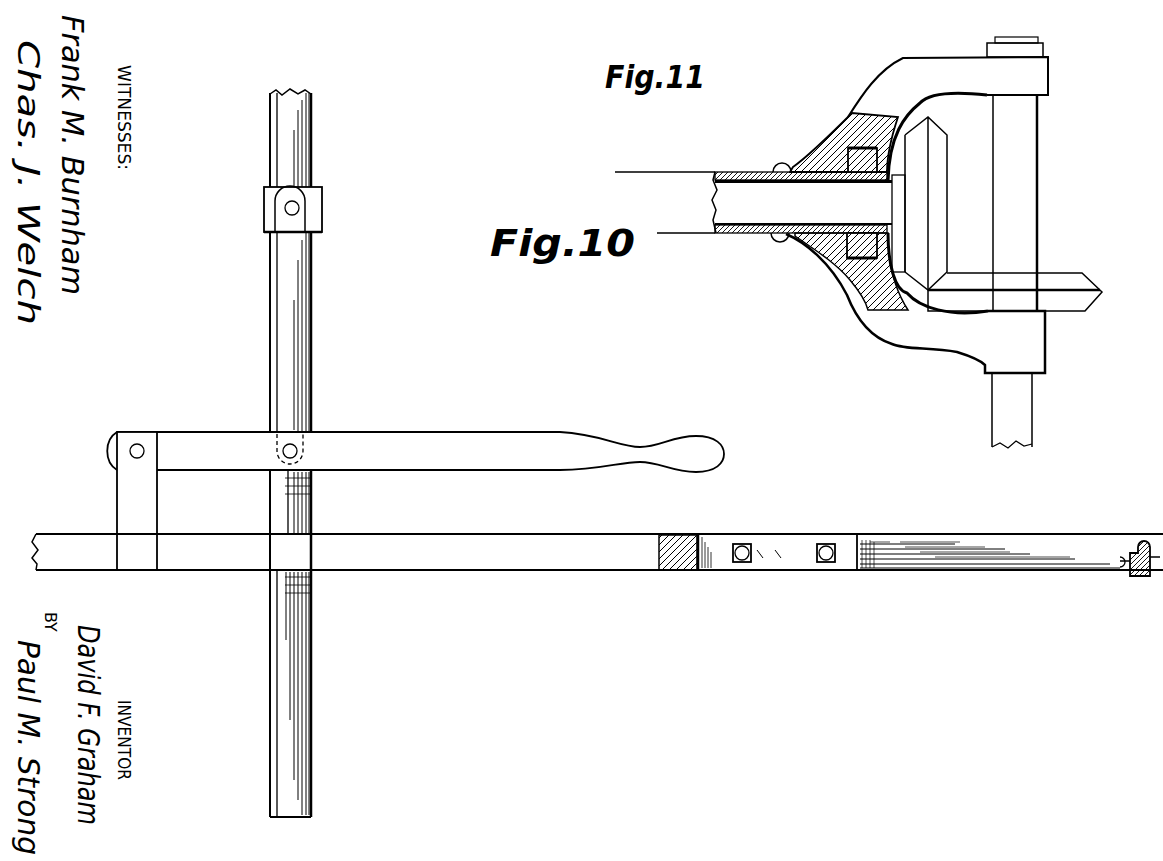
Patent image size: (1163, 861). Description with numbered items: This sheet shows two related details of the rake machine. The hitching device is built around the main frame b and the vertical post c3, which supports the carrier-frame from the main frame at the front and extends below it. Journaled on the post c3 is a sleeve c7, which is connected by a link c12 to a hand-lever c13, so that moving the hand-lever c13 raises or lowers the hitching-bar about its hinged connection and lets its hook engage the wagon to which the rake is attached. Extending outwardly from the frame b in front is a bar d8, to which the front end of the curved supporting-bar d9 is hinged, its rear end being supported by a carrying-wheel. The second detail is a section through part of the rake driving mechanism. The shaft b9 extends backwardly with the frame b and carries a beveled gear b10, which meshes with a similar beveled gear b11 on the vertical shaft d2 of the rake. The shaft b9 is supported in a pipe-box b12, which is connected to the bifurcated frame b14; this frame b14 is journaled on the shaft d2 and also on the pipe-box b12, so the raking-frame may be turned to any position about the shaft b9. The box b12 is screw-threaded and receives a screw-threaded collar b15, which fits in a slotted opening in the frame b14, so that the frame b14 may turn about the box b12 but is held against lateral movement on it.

In FIG. 10, the vertical post c3 is at (269, 352).
In FIG. 10, the link c12 is at (298, 340).
In FIG. 10, the sleeve c7 is at (322, 213).
In FIG. 10, the hand-lever c13 is at (405, 446).
In FIG. 10, the main frame b is at (610, 543).
In FIG. 10, the bar d8 is at (913, 540).
In FIG. 10, the curved supporting-bar d9 is at (1132, 577).
In FIG. 11, the pipe-box b12 is at (744, 176).
In FIG. 11, the shaft b9 is at (808, 222).
In FIG. 11, the screw-threaded collar b15 is at (831, 153).
In FIG. 11, the bifurcated frame b14 is at (877, 91).
In FIG. 11, the beveled gear b10 is at (933, 191).
In FIG. 11, the beveled gear b11 is at (1072, 284).
In FIG. 11, the vertical shaft d2 is at (1023, 172).